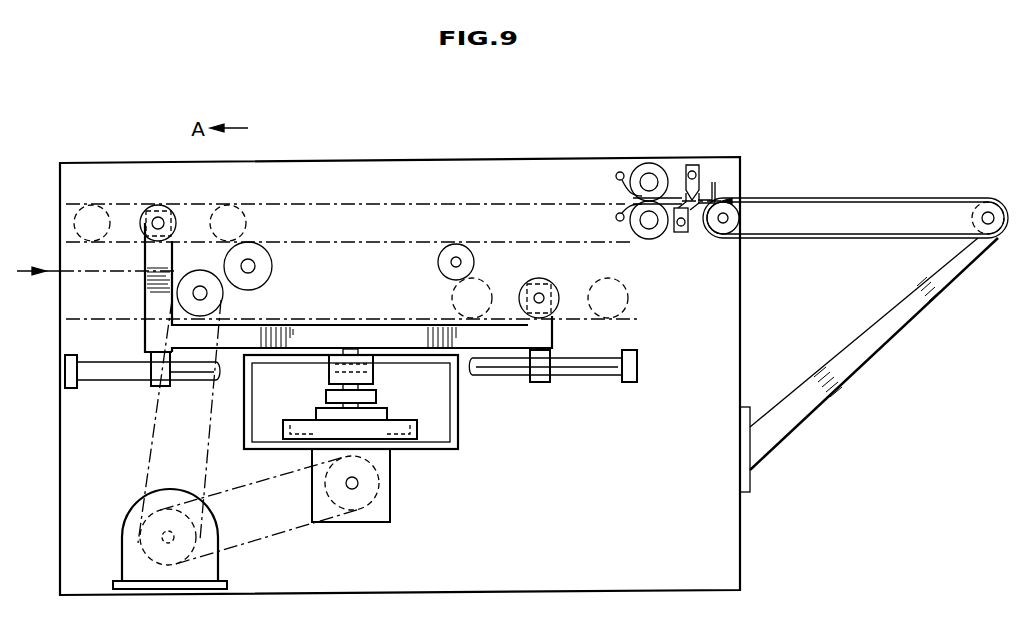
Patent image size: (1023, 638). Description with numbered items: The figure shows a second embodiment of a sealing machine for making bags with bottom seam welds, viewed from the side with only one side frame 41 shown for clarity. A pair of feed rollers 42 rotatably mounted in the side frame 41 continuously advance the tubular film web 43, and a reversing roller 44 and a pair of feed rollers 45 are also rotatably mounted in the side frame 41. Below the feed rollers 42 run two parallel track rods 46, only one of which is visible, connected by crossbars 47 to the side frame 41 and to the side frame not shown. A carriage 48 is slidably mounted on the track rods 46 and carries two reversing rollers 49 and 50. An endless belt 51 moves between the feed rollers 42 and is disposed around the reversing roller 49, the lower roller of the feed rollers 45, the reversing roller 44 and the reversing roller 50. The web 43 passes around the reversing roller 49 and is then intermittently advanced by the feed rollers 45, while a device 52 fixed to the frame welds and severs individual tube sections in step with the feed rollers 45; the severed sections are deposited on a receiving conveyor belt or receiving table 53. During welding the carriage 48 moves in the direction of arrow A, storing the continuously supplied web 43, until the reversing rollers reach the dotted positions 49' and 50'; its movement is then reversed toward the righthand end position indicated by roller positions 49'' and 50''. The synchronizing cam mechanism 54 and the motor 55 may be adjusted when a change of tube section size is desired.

The side frame 41 is at (391, 158).
The pair of feed rollers 42 is at (243, 285).
The tubular film web 43 is at (52, 275).
The reversing roller 44 is at (438, 261).
The pair of feed rollers 45 is at (641, 164).
The track rods 46 is at (122, 380).
The crossbars 47 is at (72, 388).
The carriage 48 is at (158, 308).
The reversing roller 49 is at (158, 180).
The reversing roller position 49' is at (89, 180).
The reversing roller position 49'' is at (255, 180).
The reversing roller 50 is at (552, 282).
The reversing roller position 50' is at (445, 298).
The reversing roller position 50'' is at (639, 305).
The endless belt 51 is at (470, 243).
The device 52 is at (700, 148).
The receiving conveyor belt or receiving table 53 is at (860, 180).
The synchronizing cam mechanism 54 is at (448, 460).
The motor 55 is at (203, 571).